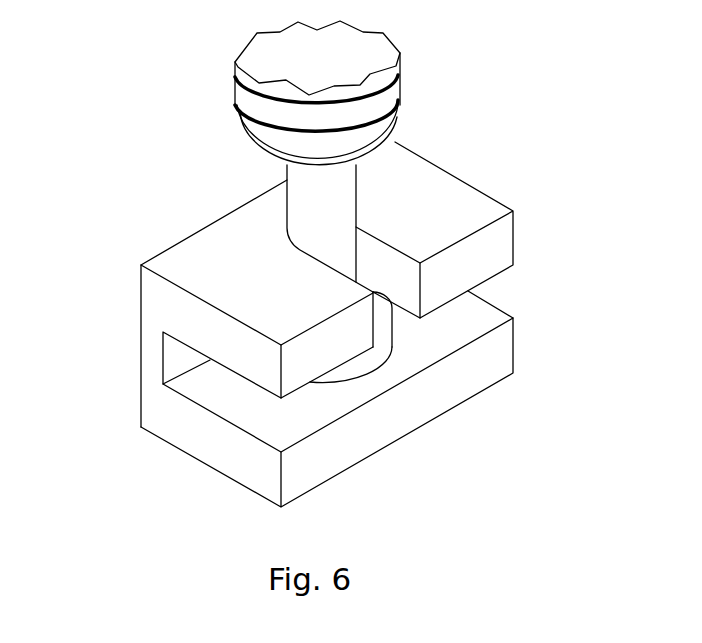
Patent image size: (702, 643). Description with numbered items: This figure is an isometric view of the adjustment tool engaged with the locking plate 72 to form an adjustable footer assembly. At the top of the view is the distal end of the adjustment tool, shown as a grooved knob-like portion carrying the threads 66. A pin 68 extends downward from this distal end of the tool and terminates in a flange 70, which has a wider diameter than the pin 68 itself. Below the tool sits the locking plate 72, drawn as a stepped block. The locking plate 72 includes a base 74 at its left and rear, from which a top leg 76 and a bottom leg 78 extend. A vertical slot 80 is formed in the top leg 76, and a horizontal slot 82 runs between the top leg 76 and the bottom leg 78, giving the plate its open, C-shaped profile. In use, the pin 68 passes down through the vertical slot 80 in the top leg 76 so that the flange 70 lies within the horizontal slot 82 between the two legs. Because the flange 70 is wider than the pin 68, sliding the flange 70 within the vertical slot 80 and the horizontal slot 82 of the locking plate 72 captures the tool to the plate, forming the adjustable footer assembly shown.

The threads 66 is at (400, 83).
The pin 68 is at (312, 188).
The flange 70 is at (370, 360).
The locking plate 72 is at (86, 254).
The base 74 is at (148, 353).
The top leg 76 is at (502, 242).
The bottom leg 78 is at (502, 353).
The vertical slot 80 is at (380, 272).
The horizontal slot 82 is at (235, 398).